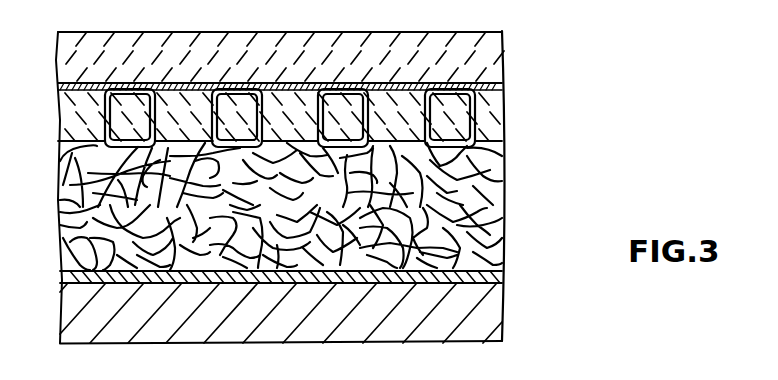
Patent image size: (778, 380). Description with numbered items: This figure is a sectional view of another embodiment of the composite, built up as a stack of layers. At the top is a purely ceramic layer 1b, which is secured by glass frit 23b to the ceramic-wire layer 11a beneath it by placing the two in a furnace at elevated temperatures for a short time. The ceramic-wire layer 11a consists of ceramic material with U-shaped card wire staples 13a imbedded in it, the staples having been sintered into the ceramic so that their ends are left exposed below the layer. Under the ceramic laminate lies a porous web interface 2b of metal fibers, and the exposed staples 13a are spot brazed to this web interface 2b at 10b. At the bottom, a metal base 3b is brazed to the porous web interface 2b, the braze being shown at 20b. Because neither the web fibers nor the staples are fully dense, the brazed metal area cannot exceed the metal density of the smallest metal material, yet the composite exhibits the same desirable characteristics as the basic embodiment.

The purely ceramic layer 1b is at (502, 55).
The glass frit 23b is at (503, 86).
The wire staples 13a is at (498, 118).
The ceramic-wire layer 11a is at (493, 128).
The spot braze 10b is at (500, 173).
The porous web interface 2b is at (482, 228).
The braze 20b is at (492, 274).
The metal base 3b is at (490, 312).